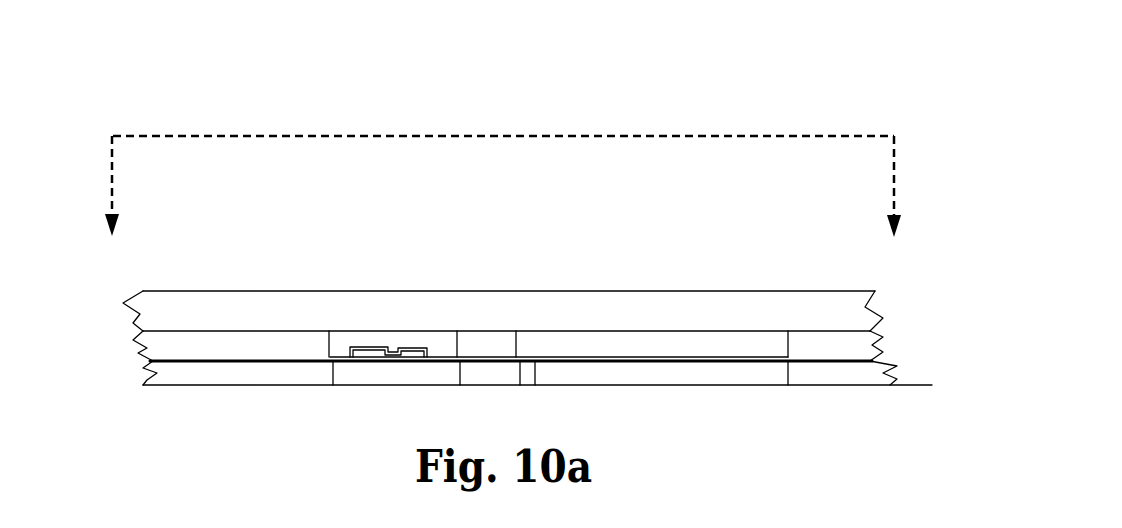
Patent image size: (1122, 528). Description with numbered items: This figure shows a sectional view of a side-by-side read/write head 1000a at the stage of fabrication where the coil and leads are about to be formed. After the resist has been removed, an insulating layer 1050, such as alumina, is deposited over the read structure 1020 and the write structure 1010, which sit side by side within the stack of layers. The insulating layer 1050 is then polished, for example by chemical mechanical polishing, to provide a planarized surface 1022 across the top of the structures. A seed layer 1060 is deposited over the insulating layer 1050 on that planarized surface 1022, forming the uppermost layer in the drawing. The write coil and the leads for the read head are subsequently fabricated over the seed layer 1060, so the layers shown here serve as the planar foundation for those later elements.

The side-by-side read/write head 1000a is at (736, 65).
The write structure 1010 is at (660, 227).
The read structure 1020 is at (370, 248).
The planarized surface 1022 is at (252, 310).
The insulating layer 1050 is at (473, 338).
The seed layer 1060 is at (137, 328).